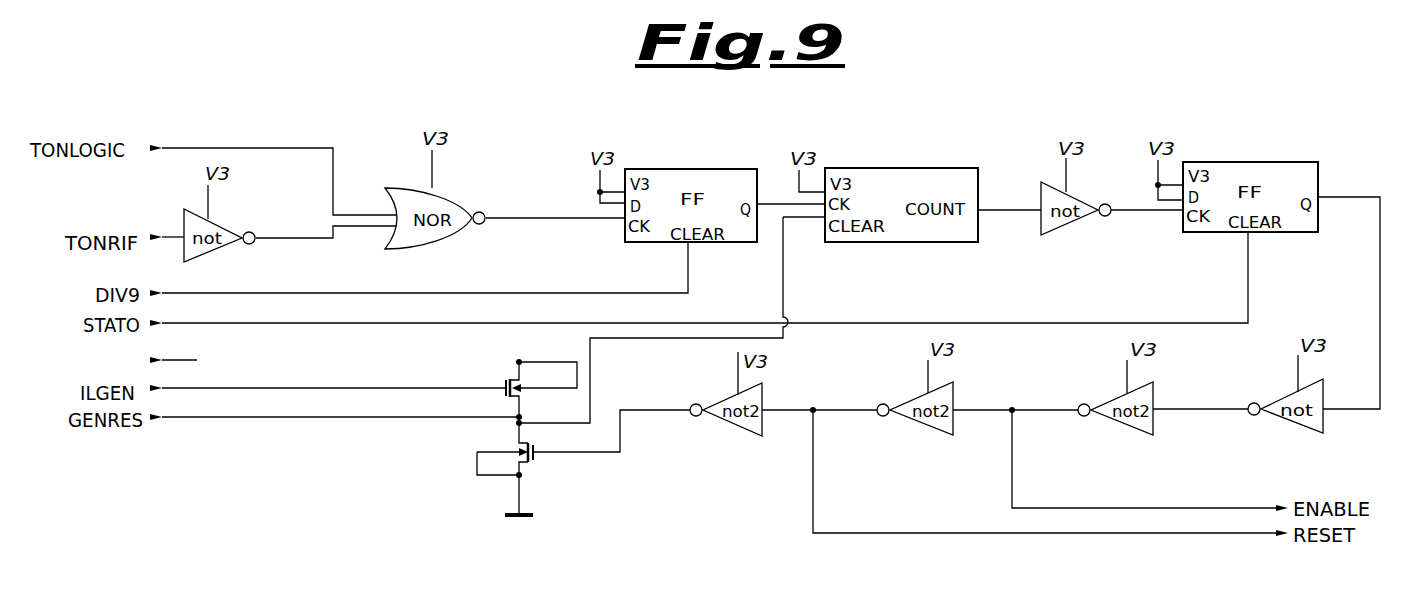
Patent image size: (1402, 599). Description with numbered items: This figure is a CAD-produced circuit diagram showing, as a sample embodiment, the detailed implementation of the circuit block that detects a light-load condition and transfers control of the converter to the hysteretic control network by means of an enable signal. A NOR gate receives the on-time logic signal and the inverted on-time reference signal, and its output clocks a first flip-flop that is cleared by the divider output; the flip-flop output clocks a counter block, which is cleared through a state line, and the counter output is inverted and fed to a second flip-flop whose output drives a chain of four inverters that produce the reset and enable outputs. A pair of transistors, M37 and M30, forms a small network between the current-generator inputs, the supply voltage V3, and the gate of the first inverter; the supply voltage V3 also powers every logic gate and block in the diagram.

The p-channel transistor M37 is at (522, 388).
The n-channel transistor M30 is at (527, 469).
The supply voltage V3 is at (519, 333).